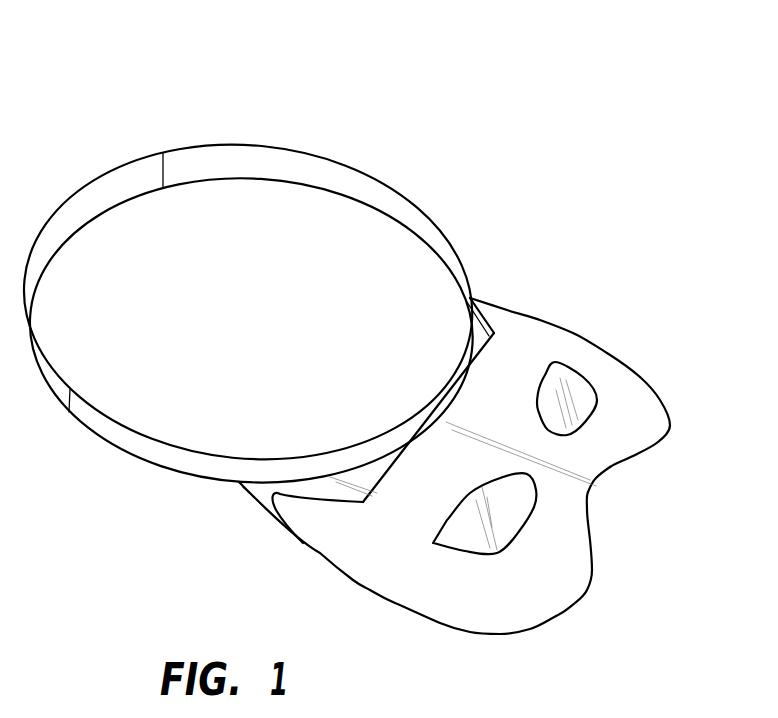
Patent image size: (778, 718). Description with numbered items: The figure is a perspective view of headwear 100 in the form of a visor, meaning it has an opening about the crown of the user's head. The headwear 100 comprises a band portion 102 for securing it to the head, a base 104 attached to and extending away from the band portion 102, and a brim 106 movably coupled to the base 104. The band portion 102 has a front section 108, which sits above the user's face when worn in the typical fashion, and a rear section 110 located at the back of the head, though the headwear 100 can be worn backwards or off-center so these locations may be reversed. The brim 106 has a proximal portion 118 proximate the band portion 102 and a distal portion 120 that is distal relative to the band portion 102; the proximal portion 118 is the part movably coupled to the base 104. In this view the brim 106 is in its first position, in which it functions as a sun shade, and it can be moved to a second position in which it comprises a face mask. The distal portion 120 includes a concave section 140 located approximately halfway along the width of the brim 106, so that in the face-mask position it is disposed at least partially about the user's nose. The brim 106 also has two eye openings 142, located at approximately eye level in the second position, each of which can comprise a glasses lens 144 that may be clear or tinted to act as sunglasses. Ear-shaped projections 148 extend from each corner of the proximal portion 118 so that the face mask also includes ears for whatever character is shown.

The headwear 100 is at (478, 78).
The band portion 102 is at (248, 302).
The base 104 is at (243, 493).
The brim 106 is at (454, 459).
The front section 108 is at (348, 461).
The rear section 110 is at (84, 214).
The proximal portion 118 is at (477, 397).
The distal portion 120 is at (640, 438).
The concave section 140 is at (618, 490).
The eye opening 142 is at (600, 376).
The glasses lens 144 is at (585, 410).
The ear-shaped projections 148 is at (484, 312).